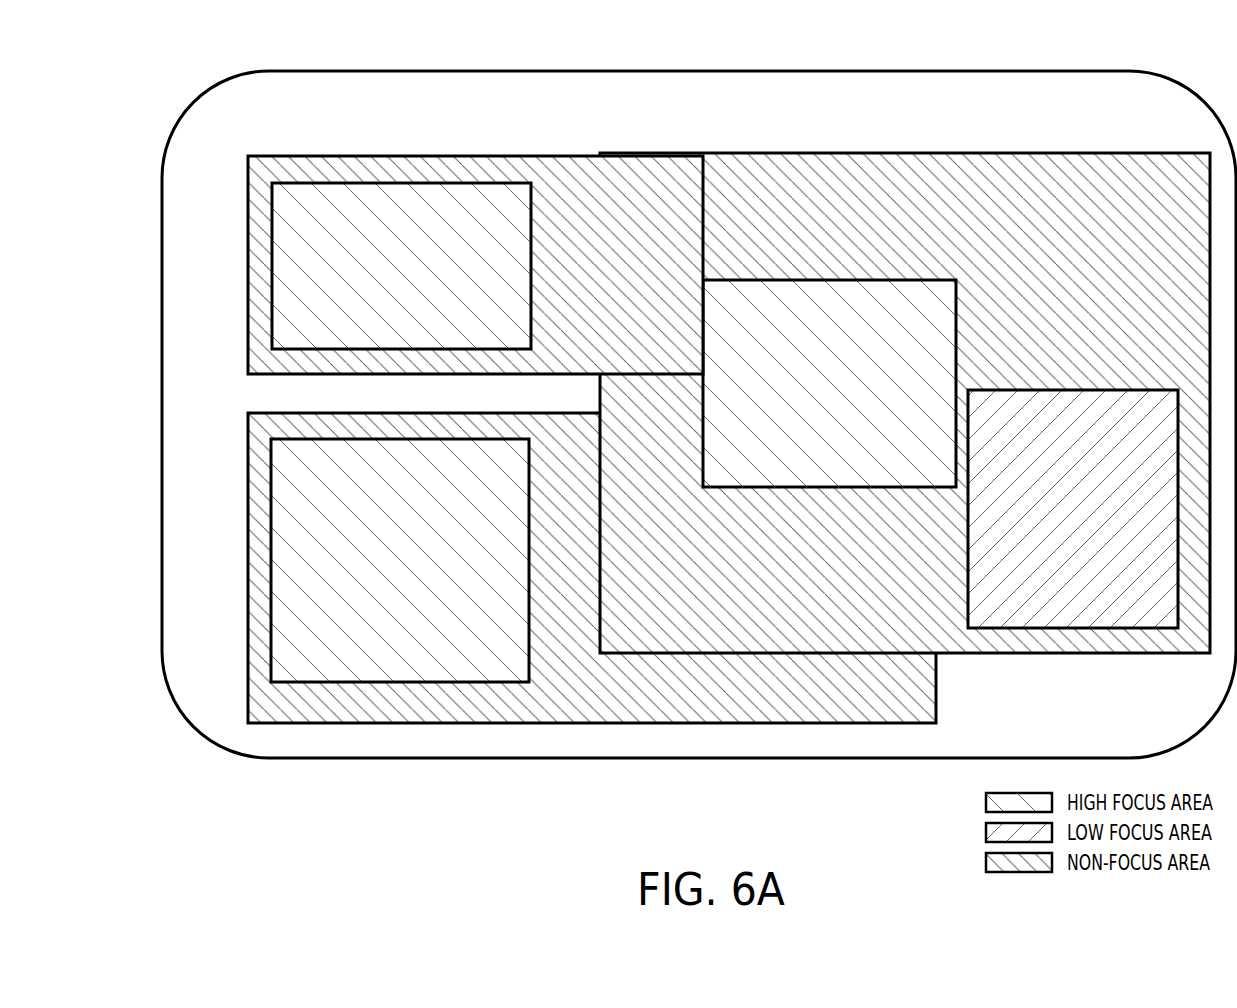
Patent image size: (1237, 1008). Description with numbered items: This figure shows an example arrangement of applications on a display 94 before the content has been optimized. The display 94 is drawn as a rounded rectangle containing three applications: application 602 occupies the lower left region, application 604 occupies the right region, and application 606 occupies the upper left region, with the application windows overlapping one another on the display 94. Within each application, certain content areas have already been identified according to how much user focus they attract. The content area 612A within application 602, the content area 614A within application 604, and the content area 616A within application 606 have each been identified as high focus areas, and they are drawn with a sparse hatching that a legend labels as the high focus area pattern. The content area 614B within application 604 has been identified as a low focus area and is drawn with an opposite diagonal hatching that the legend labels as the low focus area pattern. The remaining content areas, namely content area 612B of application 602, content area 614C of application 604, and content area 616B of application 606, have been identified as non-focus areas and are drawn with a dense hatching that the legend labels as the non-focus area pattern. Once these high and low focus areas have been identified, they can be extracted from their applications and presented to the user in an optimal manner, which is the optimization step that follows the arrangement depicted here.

The display 94 is at (858, 70).
The application 602 is at (248, 555).
The application 604 is at (1032, 653).
The application 606 is at (248, 273).
The content area 612A is at (438, 573).
The content area 612B is at (694, 704).
The content area 614A is at (868, 397).
The content area 614B is at (1112, 524).
The content area 614C is at (1105, 277).
The content area 616A is at (440, 279).
The content area 616B is at (655, 283).